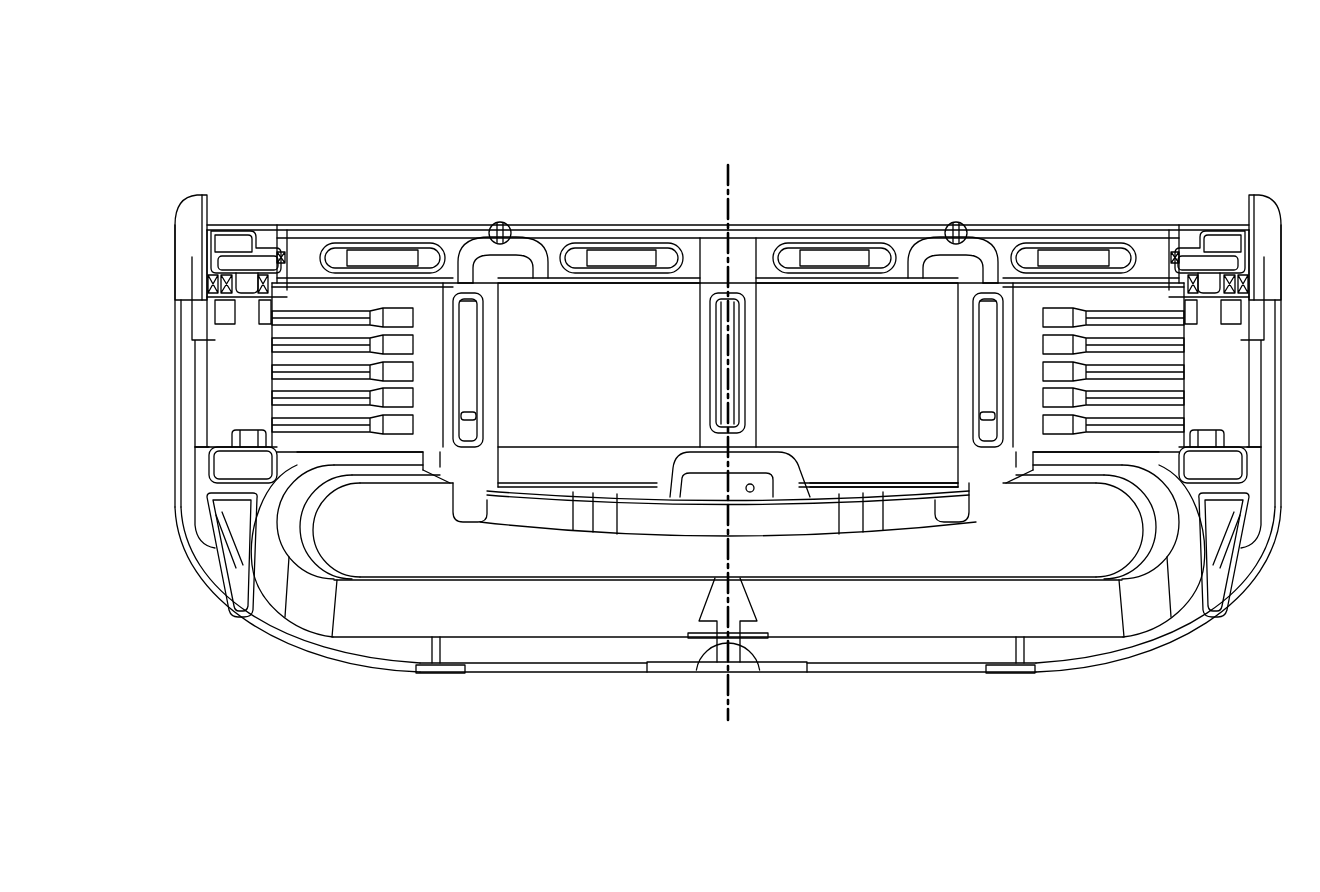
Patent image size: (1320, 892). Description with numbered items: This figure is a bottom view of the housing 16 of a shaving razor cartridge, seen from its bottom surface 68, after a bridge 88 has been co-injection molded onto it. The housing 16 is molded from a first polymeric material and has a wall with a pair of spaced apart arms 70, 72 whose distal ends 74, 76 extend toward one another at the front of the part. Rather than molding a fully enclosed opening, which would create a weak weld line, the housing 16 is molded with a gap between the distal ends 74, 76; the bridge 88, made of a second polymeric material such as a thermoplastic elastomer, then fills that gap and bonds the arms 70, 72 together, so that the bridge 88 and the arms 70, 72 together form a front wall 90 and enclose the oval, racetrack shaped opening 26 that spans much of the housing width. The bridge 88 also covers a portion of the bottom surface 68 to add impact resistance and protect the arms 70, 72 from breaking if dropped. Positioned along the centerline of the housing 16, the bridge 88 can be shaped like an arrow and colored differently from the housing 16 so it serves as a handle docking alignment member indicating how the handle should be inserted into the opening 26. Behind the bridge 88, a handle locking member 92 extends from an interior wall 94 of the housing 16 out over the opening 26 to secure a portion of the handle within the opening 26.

The housing 16 is at (160, 146).
The opening 26 is at (1045, 547).
The bottom surface 68 is at (1150, 617).
The arm 70 is at (452, 680).
The arm 72 is at (1004, 680).
The distal end 74 is at (716, 655).
The distal end 76 is at (740, 655).
The bridge 88 is at (720, 600).
The front wall 90 is at (855, 675).
The handle locking member 92 is at (828, 494).
The interior wall 94 is at (446, 488).